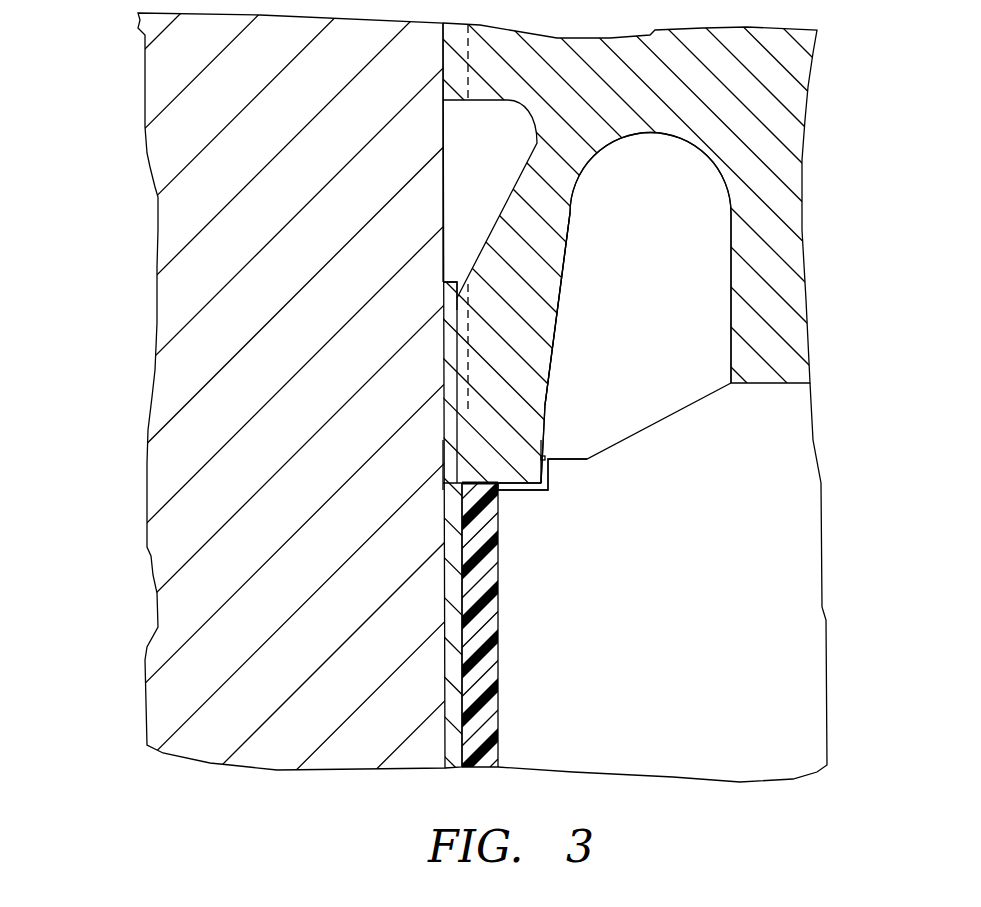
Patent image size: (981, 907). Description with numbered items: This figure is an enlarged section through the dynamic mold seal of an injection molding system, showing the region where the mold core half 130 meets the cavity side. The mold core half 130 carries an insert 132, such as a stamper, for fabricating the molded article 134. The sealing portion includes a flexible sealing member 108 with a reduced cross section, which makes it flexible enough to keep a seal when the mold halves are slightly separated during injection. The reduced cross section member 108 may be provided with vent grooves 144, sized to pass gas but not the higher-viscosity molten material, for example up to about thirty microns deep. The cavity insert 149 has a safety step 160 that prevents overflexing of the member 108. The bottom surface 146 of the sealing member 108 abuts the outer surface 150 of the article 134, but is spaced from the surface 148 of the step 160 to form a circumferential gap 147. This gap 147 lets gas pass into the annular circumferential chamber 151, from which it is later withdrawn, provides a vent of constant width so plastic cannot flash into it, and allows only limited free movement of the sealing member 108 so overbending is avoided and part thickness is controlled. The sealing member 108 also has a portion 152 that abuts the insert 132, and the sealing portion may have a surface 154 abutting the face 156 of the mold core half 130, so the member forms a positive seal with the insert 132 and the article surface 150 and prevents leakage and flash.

The flexible sealing member 108 is at (537, 211).
The mold core half 130 is at (156, 267).
The insert 132 is at (448, 392).
The molded article 134 is at (499, 632).
The vent grooves 144 is at (457, 308).
The bottom surface 146 is at (546, 410).
The circumferential gap 147 is at (546, 455).
The surface of the step portion 148 is at (527, 491).
The cavity insert 149 is at (690, 586).
The outer surface of the article 150 is at (455, 507).
The circumferential chamber 151 is at (676, 302).
The portion of the sealing member 152 is at (443, 467).
The surface of the sealing portion 154 is at (437, 50).
The face of the mold core half 156 is at (438, 197).
The safety step 160 is at (549, 473).